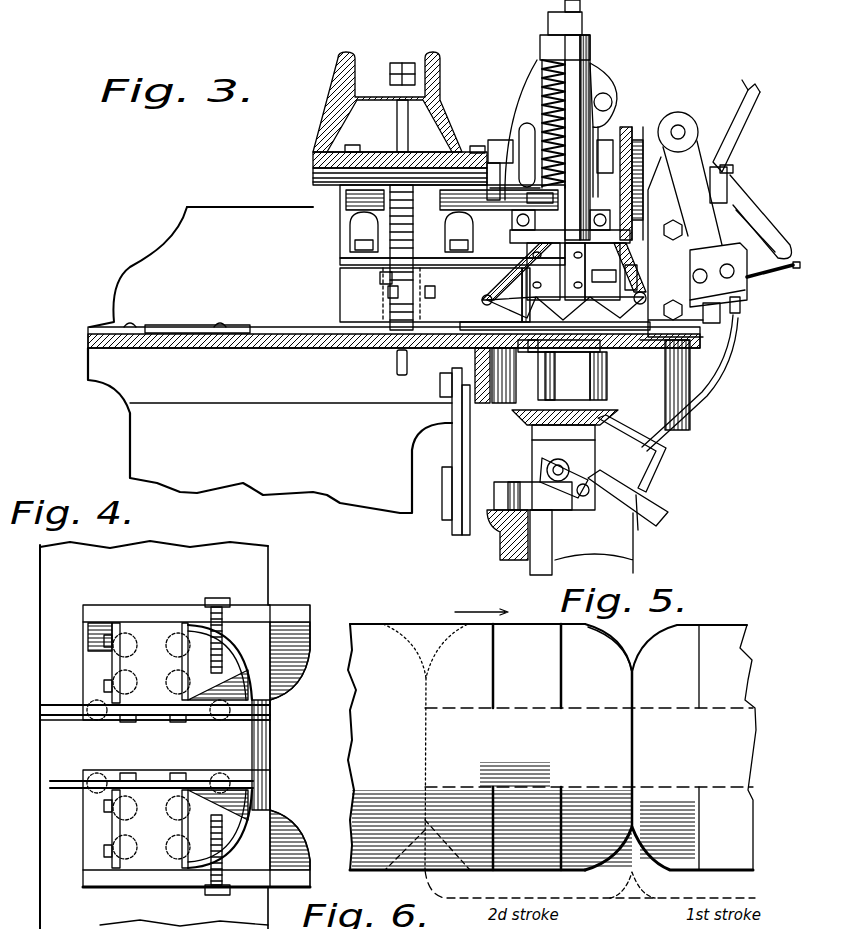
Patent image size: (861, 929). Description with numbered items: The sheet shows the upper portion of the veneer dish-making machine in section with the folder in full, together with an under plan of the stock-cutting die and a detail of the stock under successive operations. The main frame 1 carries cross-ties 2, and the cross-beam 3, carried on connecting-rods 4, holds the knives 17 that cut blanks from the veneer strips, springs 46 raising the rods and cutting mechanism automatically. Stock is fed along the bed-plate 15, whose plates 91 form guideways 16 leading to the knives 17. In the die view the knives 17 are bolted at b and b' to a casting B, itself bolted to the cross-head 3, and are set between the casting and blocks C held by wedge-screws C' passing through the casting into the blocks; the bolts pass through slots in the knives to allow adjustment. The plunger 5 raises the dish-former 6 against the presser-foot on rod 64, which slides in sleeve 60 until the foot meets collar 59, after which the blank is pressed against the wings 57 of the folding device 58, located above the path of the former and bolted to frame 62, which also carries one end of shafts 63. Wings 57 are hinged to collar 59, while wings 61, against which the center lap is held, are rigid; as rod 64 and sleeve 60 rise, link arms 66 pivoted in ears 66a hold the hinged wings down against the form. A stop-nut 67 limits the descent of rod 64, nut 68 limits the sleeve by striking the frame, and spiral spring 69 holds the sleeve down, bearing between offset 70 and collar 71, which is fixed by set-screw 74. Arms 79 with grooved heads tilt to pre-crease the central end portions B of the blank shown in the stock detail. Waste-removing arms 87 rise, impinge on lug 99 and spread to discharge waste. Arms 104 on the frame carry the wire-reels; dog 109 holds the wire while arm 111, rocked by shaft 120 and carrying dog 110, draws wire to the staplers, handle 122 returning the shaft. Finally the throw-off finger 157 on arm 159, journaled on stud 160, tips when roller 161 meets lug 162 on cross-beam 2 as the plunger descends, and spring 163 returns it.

In FIG. 3, the main frame 1 is at (398, 390).
In FIG. 3, the cross-ties 2 is at (515, 535).
In FIG. 3, the cross-beam 3 is at (345, 85).
In FIG. 3, the connecting-rods 4 is at (397, 128).
In FIG. 3, the plunger 5 is at (563, 467).
In FIG. 3, the dish-former 6 is at (606, 417).
In FIG. 3, the bed-plate 15 is at (88, 338).
In FIG. 3, the guideways 16 is at (387, 278).
In FIG. 3, the springs 46 is at (380, 278).
In FIG. 3, the hinged wings 57 is at (565, 307).
In FIG. 3, the folding device 58 is at (590, 42).
In FIG. 3, the collar 59 is at (570, 300).
In FIG. 3, the sleeve 60 is at (548, 104).
In FIG. 3, the rigid wings 61 is at (563, 307).
In FIG. 3, the frame 62 is at (626, 130).
In FIG. 3, the shafts 63 is at (628, 130).
In FIG. 3, the rod 64 is at (548, 326).
In FIG. 3, the link arms 66 is at (503, 278).
In FIG. 3, the ears 66a is at (645, 294).
In FIG. 3, the stop-nut 67 is at (585, 12).
In FIG. 3, the nut 68 is at (548, 27).
In FIG. 3, the spiral spring 69 is at (545, 88).
In FIG. 3, the offset 70 is at (540, 52).
In FIG. 3, the collar 71 is at (530, 203).
In FIG. 3, the set-screw 74 is at (523, 208).
In FIG. 3, the arms 79 is at (580, 370).
In FIG. 3, the waste-removing arms 87 is at (465, 400).
In FIG. 3, the plates 91 is at (172, 323).
In FIG. 3, the lug 99 is at (462, 420).
In FIG. 3, the upwardly-extending arms 104 is at (732, 80).
In FIG. 3, the wire-grasping dog 109 is at (748, 290).
In FIG. 3, the dog 110 is at (723, 303).
In FIG. 3, the arm 111 is at (697, 227).
In FIG. 3, the shaft 120 is at (692, 130).
In FIG. 3, the lever or handle 122 is at (753, 217).
In FIG. 3, the throw-off finger 157 is at (668, 430).
In FIG. 3, the arm 159 is at (642, 510).
In FIG. 3, the stud 160 is at (642, 488).
In FIG. 3, the roller 161 is at (545, 468).
In FIG. 3, the lug 162 is at (533, 496).
In FIG. 3, the spring 163 is at (662, 455).
In FIG. 4, the knives 17 is at (268, 742).
In FIG. 4, the casting B is at (196, 746).
In FIG. 5, the casting B is at (596, 747).
In FIG. 4, the bolts b is at (155, 746).
In FIG. 4, the bolts b' is at (117, 745).
In FIG. 4, the blocks C is at (220, 746).
In FIG. 4, the wedge-screws C' is at (221, 747).